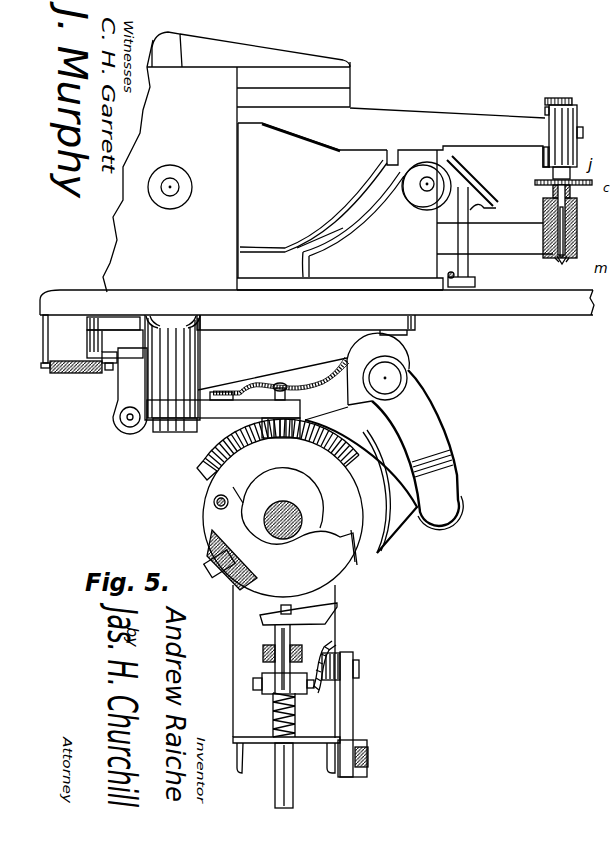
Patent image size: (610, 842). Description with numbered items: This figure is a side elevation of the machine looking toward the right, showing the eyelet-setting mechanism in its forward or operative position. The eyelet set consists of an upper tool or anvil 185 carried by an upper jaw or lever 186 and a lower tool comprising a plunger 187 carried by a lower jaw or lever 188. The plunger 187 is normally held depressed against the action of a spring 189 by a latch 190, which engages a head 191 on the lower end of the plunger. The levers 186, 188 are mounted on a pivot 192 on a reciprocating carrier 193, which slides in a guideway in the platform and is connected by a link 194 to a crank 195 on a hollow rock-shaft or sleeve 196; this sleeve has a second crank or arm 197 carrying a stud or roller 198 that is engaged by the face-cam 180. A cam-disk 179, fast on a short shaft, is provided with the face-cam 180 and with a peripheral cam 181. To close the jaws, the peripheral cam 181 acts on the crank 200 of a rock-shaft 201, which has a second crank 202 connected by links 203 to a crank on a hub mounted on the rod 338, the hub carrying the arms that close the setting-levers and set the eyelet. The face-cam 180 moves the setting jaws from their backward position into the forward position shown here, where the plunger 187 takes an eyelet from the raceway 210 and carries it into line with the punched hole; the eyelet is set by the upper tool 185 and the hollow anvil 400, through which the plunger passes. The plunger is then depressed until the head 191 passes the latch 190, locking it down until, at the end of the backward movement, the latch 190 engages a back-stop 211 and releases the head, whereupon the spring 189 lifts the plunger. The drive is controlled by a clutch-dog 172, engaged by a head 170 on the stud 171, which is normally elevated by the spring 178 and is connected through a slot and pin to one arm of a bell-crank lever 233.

The rod 338 is at (168, 195).
The upper jaw or lever 186 is at (396, 122).
The reciprocating carrier 193 is at (382, 278).
The pivot 192 is at (426, 187).
The raceway 210 is at (456, 170).
The back-stop 211 is at (475, 285).
The lower jaw or lever 188 is at (518, 258).
The upper tool or anvil 185 is at (553, 174).
The hollow anvil 400 is at (552, 192).
The plunger 187 is at (553, 217).
The spring 189 is at (570, 233).
The head 191 is at (558, 269).
The latch 190 is at (579, 269).
The crank 195 is at (90, 342).
The links 203 is at (118, 392).
The hollow rock-shaft or sleeve 196 is at (208, 352).
The second crank or arm 197 is at (210, 413).
The stud or roller 198 is at (277, 437).
The second crank 202 is at (273, 374).
The link 194 is at (281, 322).
The face-cam 180 is at (313, 434).
The clutch-dog 172 is at (208, 572).
The cam-disk 179 is at (355, 562).
The peripheral cam 181 is at (417, 525).
The crank 200 is at (443, 415).
The rock-shaft 201 is at (408, 367).
The head 170 is at (260, 620).
The stud 171 is at (275, 637).
The spring 178 is at (277, 708).
The bell-crank lever 233 is at (353, 713).